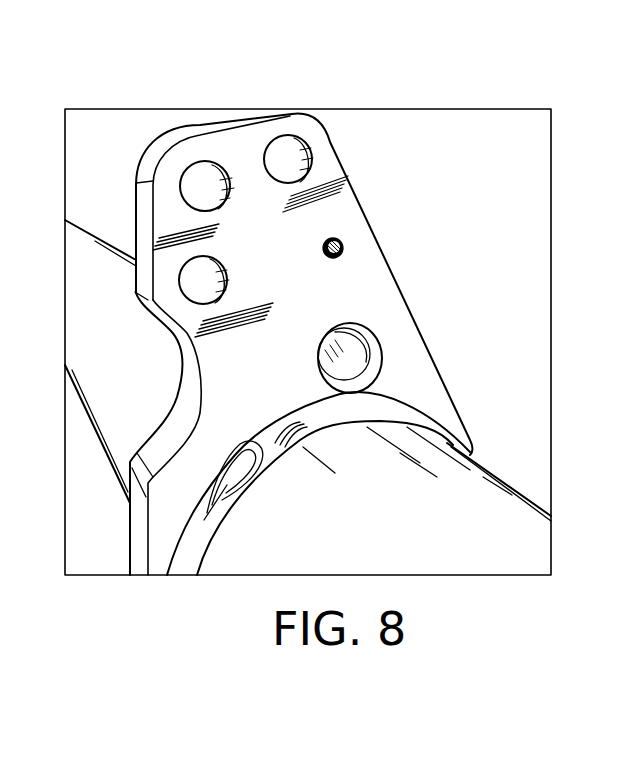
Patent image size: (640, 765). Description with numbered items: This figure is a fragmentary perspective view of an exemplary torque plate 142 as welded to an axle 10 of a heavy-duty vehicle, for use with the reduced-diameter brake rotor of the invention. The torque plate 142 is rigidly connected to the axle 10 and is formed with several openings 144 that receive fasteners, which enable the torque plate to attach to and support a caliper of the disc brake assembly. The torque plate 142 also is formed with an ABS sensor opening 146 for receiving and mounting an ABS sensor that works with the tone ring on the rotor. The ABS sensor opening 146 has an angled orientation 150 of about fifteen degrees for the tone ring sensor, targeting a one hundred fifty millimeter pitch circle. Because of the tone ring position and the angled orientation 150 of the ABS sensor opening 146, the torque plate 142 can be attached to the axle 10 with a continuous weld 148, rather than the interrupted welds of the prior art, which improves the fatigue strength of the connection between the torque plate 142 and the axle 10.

The axle 10 is at (500, 469).
The torque plate 142 is at (367, 218).
The openings 144 is at (218, 168).
The ABS sensor opening 146 is at (360, 359).
The continuous weld 148 is at (183, 550).
The angled orientation 150 is at (365, 378).